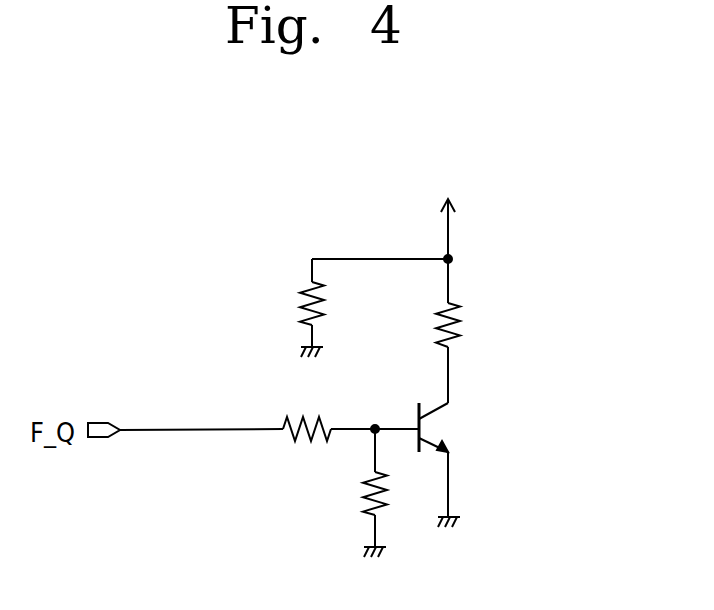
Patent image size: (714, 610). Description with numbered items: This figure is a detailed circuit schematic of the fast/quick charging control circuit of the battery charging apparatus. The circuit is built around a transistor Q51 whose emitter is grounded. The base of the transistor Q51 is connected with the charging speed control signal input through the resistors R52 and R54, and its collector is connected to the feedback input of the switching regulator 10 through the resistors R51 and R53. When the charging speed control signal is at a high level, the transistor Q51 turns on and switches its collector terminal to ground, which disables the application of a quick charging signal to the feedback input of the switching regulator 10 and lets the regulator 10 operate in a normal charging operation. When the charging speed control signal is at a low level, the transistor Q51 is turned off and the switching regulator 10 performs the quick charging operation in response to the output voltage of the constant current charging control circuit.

The switching regulator 10 is at (457, 193).
The resistor R51 is at (474, 331).
The resistor R52 is at (329, 412).
The resistor R53 is at (285, 308).
The resistor R54 is at (347, 493).
The transistor Q51 is at (454, 465).